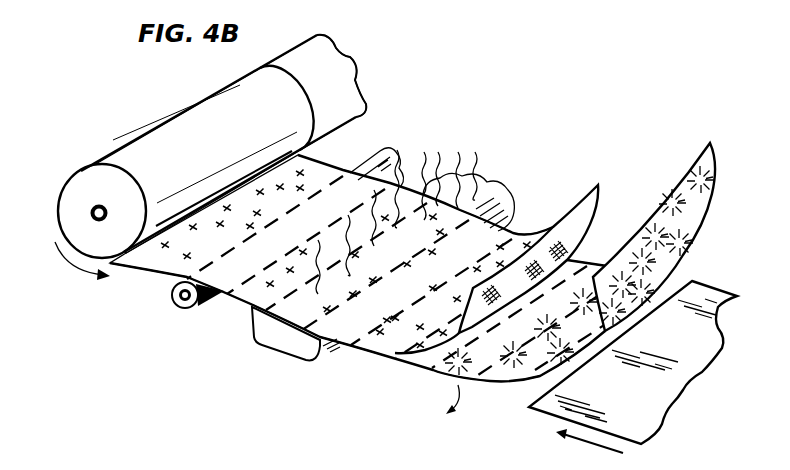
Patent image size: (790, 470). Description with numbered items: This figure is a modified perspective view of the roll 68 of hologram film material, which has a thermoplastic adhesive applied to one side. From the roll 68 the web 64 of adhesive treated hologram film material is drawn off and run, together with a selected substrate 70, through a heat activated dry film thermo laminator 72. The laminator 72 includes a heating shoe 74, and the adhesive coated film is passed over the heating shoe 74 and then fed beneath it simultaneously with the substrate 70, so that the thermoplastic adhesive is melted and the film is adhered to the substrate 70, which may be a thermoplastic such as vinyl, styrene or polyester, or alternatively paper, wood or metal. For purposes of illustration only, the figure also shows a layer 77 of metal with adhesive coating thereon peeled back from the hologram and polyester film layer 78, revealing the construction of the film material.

The web 64 is at (240, 299).
The roll 68 is at (66, 182).
The substrate 70 is at (641, 406).
The heat activated dry film thermo laminator 72 is at (188, 334).
The heating shoe 74 is at (287, 355).
The layer of metal 77 is at (596, 204).
The hologram and polyester film layer 78 is at (711, 142).